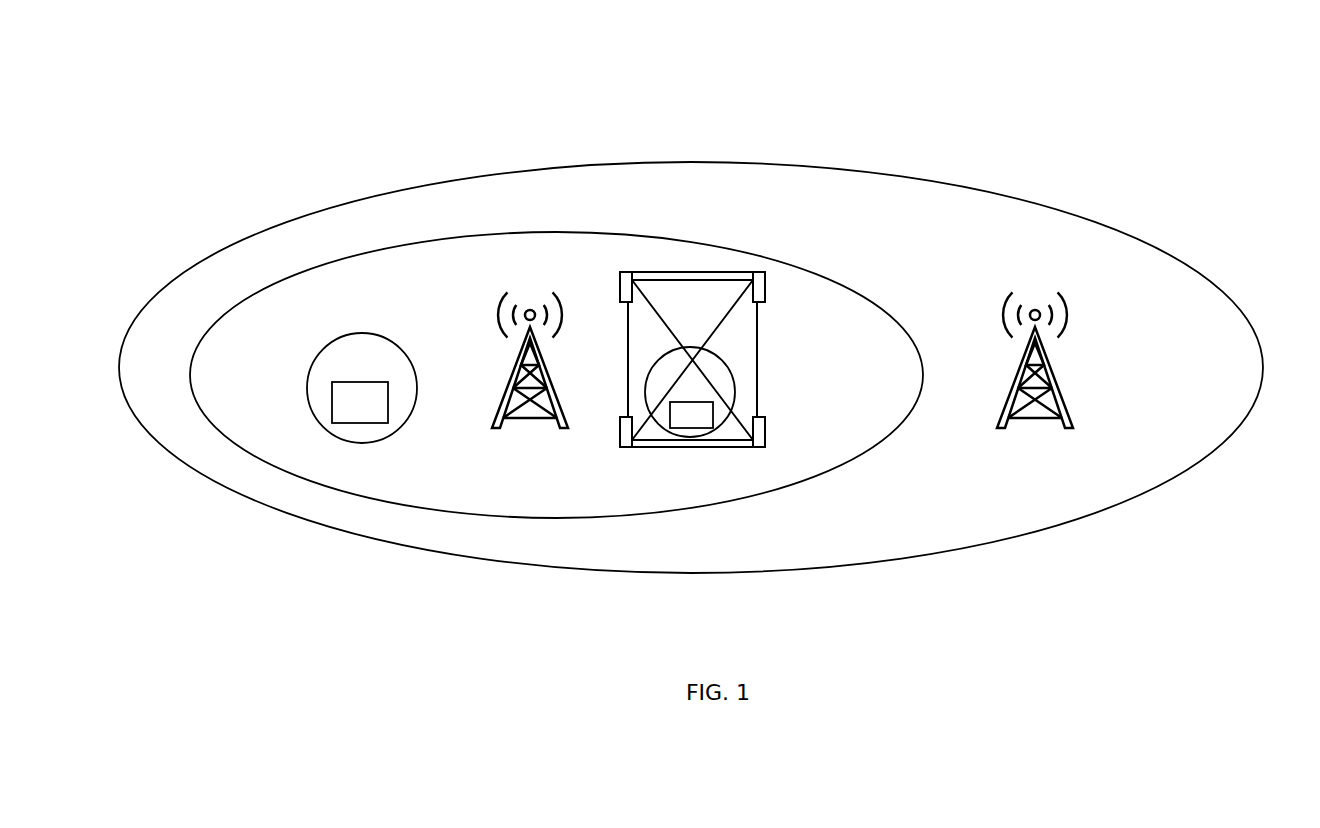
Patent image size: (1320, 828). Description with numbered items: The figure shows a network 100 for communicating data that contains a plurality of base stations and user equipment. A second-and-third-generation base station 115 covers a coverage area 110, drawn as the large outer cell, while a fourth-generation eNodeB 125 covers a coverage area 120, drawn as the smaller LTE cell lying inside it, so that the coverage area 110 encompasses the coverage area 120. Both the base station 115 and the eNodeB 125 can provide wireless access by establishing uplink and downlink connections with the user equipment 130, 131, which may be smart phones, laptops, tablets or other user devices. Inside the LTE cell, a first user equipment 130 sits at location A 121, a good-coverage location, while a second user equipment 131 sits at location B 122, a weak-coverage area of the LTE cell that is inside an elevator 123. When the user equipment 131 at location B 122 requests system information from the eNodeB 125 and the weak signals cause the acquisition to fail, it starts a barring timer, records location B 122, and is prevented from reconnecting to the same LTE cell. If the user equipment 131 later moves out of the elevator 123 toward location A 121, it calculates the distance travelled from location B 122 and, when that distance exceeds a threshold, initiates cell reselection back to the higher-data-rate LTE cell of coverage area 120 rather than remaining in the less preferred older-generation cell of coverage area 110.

The network 100 is at (636, 72).
The coverage area 110 is at (738, 163).
The coverage area 120 is at (546, 231).
The location A 121 is at (386, 343).
The user equipment 130 is at (386, 401).
The eNodeB 125 is at (542, 380).
The elevator 123 is at (745, 298).
The location B 122 is at (713, 368).
The user equipment 131 is at (713, 414).
The base station 115 is at (1048, 369).